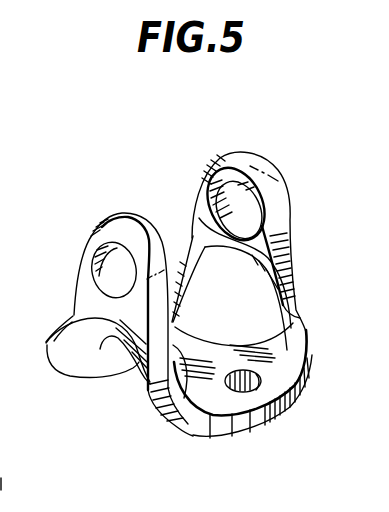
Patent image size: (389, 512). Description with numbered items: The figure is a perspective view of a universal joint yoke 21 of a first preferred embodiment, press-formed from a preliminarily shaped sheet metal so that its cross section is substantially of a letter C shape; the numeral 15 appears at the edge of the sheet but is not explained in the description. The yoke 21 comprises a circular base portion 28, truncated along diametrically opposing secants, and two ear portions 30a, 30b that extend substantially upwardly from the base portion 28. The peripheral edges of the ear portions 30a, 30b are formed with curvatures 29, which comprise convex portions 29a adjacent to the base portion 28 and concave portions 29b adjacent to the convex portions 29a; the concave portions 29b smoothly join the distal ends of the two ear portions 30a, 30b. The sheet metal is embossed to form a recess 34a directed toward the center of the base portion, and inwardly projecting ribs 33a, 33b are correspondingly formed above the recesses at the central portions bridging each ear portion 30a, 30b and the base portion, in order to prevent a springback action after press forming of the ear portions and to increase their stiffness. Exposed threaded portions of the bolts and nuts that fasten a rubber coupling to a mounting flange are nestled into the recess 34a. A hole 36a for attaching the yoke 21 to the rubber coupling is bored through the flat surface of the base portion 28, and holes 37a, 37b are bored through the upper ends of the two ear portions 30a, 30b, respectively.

The universal joint 15 is at (12, 483).
The yoke 21 is at (310, 295).
The base portion 28 is at (229, 398).
The curvatures 29 is at (183, 225).
The convex portions 29a is at (298, 307).
The concave portions 29b is at (282, 250).
The ear portion 30a is at (113, 215).
The ear portion 30b is at (247, 165).
The rib 33a is at (199, 412).
The rib 33b is at (243, 316).
The recess 34a is at (110, 356).
The hole 36a is at (288, 398).
The hole 37a is at (101, 262).
The hole 37b is at (237, 215).